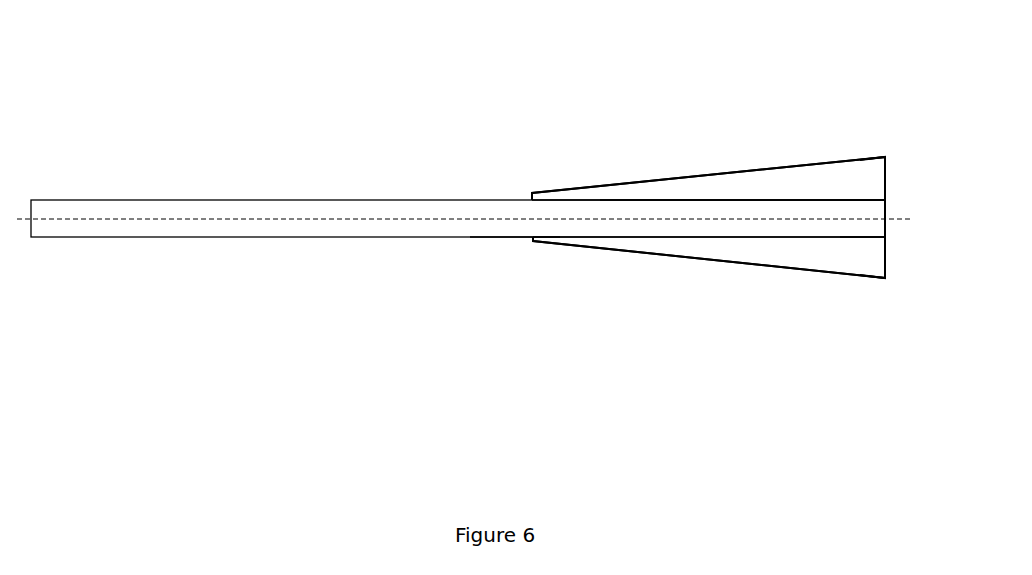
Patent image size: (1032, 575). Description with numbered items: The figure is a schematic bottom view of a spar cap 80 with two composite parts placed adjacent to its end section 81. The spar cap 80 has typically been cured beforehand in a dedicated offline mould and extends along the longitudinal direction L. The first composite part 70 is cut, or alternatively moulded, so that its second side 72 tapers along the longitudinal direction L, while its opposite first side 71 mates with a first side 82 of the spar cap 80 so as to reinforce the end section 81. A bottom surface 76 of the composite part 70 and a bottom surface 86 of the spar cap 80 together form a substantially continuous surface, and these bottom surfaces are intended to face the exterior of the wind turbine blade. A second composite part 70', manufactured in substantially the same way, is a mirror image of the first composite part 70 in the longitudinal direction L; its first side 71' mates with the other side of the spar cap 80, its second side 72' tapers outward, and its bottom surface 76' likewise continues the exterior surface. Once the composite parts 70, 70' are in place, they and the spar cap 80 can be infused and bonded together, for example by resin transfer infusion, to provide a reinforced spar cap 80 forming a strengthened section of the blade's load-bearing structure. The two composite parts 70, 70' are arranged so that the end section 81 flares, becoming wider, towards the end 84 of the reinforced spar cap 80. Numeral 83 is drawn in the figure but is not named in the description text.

The spar cap 80 is at (420, 238).
The longitudinal direction L is at (485, 219).
The bottom surface of the spar cap 86 is at (517, 228).
The lower wing inner surface 83 is at (680, 235).
The first side of the spar cap 82 is at (672, 198).
The end section of the spar cap 81 is at (727, 201).
The composite part 70 is at (708, 118).
The bottom surface of the composite part 76 is at (708, 140).
The first side of the composite part 71 is at (851, 156).
The second side of the composite part 72 is at (869, 130).
The end of the reinforced spar cap 84 is at (888, 215).
The second composite part 70' is at (716, 320).
The bottom surface of the second composite part 76' is at (709, 301).
The first side of the second composite part 71' is at (889, 276).
The second side of the second composite part 72' is at (897, 313).